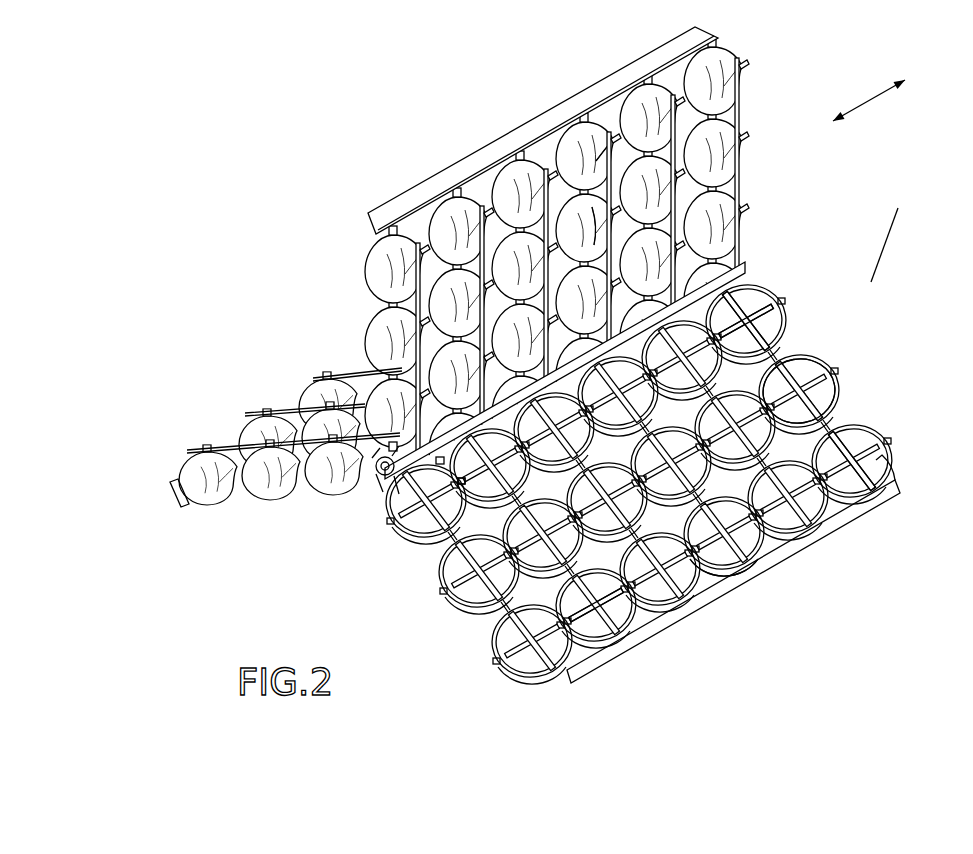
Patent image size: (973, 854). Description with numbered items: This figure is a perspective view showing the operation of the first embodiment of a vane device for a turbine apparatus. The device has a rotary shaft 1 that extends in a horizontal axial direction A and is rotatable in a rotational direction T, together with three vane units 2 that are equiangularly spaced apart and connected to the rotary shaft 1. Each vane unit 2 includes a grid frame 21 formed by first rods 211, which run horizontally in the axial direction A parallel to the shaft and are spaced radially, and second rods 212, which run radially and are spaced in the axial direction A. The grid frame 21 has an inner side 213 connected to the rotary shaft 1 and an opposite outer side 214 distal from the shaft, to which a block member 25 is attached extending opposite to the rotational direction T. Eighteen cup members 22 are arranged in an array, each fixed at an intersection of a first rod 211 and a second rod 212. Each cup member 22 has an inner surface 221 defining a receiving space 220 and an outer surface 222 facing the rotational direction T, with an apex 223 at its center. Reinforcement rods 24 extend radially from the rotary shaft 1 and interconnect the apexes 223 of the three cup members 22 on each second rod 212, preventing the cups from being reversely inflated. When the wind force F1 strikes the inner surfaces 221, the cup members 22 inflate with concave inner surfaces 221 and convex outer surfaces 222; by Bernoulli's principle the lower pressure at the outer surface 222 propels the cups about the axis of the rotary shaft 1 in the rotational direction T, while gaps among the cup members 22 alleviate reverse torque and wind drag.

The rotary shaft 1 is at (440, 430).
The vane unit 2 is at (542, 368).
The grid frame 21 is at (546, 353).
The cup member 22 is at (546, 294).
The reinforcement rod 24 is at (722, 110).
The block member 25 is at (437, 187).
The first rod 211 is at (757, 317).
The second rod 212 is at (762, 337).
The inner side 213 is at (438, 465).
The outer side 214 is at (738, 547).
The receiving space 220 is at (673, 477).
The inner surface 221 is at (827, 403).
The outer surface 222 is at (565, 140).
The apex 223 is at (588, 150).
The rotational direction T is at (376, 486).
The axial direction A is at (871, 99).
The wind force F1 is at (891, 231).